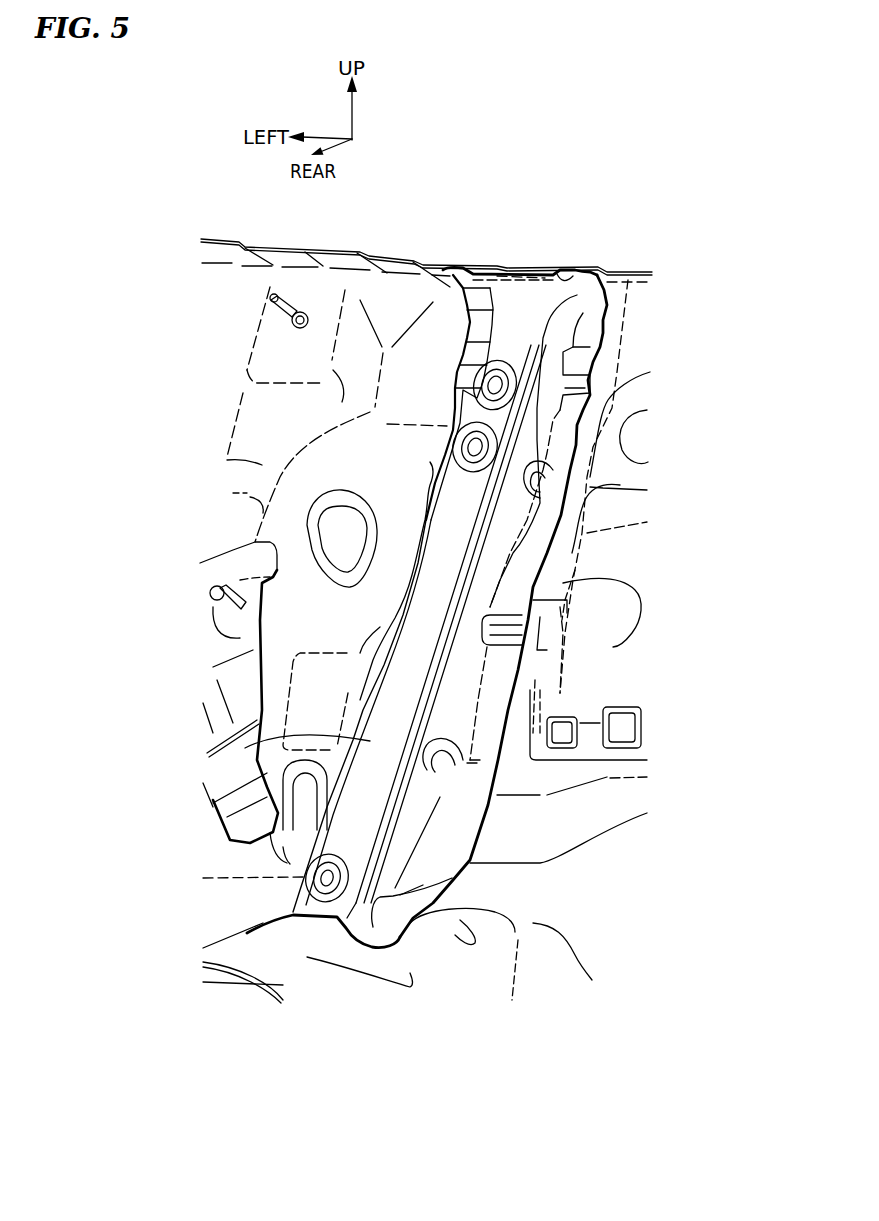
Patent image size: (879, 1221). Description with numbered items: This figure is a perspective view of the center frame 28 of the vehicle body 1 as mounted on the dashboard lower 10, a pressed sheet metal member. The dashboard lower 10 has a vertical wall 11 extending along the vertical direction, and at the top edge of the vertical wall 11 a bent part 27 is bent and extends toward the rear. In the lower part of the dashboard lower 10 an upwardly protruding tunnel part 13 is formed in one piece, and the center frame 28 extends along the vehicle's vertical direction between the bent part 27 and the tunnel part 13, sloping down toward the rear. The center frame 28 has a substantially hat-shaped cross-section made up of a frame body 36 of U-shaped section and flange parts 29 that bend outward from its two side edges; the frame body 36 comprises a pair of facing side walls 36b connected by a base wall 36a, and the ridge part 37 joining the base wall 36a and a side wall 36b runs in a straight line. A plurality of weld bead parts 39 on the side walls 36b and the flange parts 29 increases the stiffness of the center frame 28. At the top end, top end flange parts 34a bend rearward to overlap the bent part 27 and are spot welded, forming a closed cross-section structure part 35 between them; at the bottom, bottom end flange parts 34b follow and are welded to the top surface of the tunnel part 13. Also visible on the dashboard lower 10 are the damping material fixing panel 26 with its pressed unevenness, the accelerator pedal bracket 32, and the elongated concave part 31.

The vehicle 1 is at (694, 236).
The dashboard lower 10 is at (205, 312).
The vertical wall 11 is at (217, 405).
The tunnel part 13 is at (297, 973).
The damping material fixing panel 26 is at (640, 613).
The bent part 27 is at (380, 252).
The center frame 28 is at (518, 308).
The flange parts 29 is at (430, 462).
The concave part 31 is at (480, 887).
The accelerator pedal bracket 32 is at (210, 647).
The top end flange parts 34a is at (553, 272).
The bottom end flange parts 34b is at (250, 923).
The closed cross-section structure part 35 is at (611, 286).
The frame body 36 is at (303, 837).
The base wall 36a is at (313, 737).
The side walls 36b is at (457, 687).
The ridge part 37 is at (465, 598).
The weld bead parts 39 is at (553, 478).